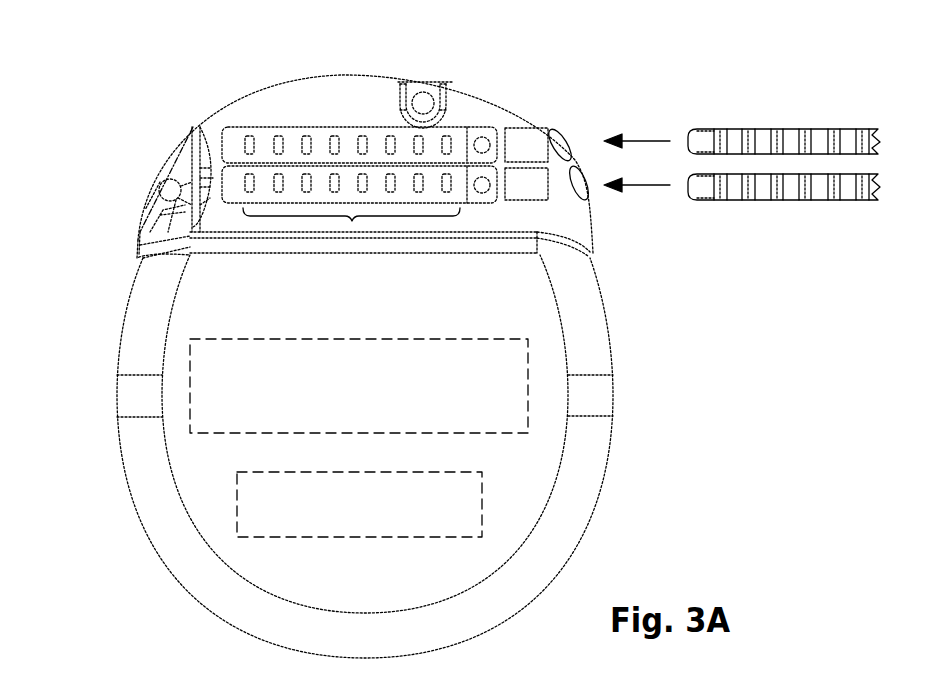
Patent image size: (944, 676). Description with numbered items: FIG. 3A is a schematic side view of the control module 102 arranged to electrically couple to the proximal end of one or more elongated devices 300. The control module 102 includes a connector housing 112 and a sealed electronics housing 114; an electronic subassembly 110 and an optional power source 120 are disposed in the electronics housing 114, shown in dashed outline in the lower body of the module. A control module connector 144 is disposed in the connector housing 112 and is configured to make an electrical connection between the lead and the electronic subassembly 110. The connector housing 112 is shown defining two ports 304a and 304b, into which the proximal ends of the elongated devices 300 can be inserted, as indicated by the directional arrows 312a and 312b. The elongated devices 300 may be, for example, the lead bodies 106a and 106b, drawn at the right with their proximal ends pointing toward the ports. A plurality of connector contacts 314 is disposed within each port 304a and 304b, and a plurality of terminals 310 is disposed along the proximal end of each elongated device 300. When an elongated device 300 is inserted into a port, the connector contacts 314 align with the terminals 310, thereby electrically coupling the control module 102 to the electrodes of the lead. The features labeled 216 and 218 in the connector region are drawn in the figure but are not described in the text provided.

The control module 102 is at (168, 112).
The connector housing 112 is at (339, 88).
The connector contact 314 is at (258, 130).
The control module connector 144 is at (457, 125).
The port 304a is at (570, 123).
The port 304b is at (597, 192).
The directional arrow 312a is at (641, 141).
The directional arrow 312b is at (648, 186).
The lead body 106a is at (697, 130).
The lead body 106b is at (697, 201).
The terminals 310 is at (870, 121).
The elongated device 300 is at (784, 133).
The contact pad array 216 is at (352, 222).
The alignment holes 218 is at (483, 193).
The electronics housing 114 is at (190, 313).
The electronic subassembly 110 is at (208, 393).
The power source 120 is at (255, 510).